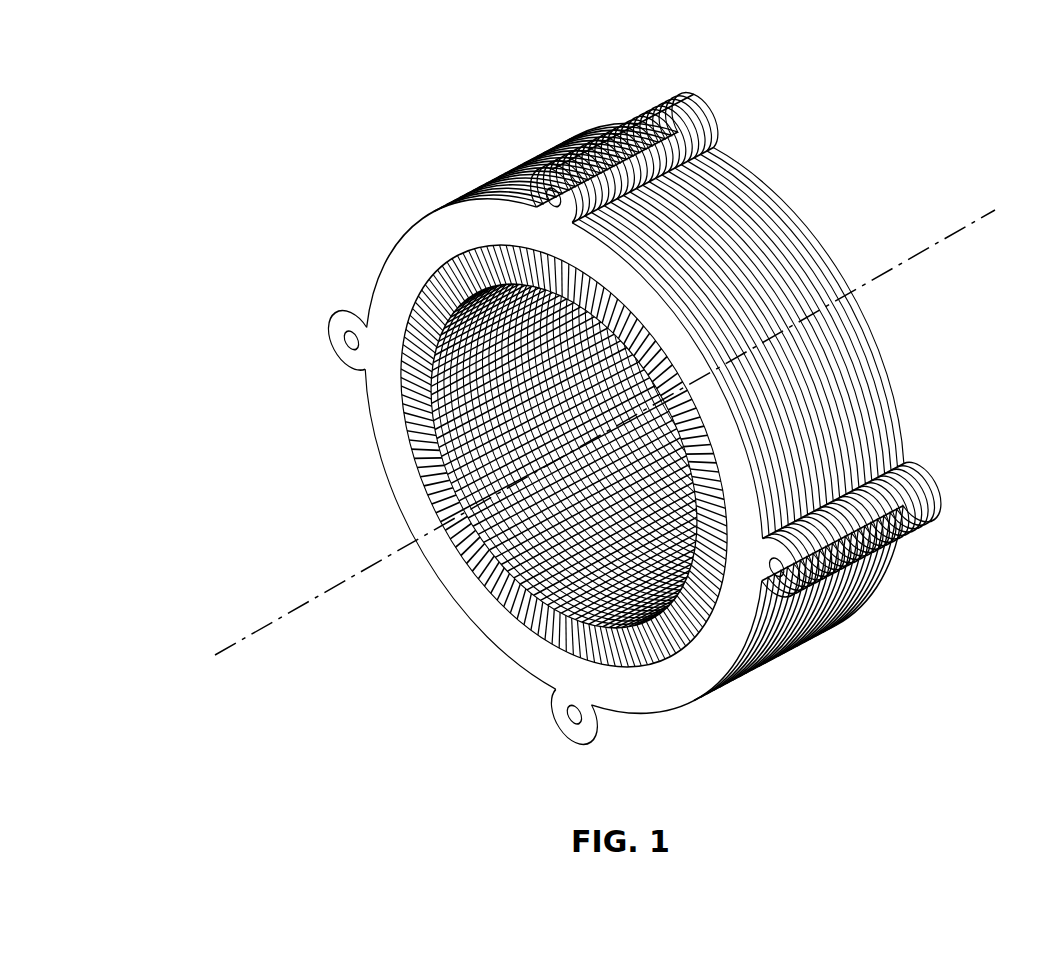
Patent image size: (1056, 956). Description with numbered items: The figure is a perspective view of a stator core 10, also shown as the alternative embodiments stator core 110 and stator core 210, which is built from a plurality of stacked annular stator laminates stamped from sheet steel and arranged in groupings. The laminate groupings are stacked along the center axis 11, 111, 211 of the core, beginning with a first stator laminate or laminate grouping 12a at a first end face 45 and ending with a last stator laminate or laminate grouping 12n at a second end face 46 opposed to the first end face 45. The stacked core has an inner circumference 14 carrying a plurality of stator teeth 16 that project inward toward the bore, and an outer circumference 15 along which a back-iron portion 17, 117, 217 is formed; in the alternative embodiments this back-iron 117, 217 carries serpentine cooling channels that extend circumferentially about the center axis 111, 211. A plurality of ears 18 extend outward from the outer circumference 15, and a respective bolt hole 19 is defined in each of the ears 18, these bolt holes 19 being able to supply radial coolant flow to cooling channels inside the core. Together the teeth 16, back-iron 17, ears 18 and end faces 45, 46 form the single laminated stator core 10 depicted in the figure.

The stator core 10 is at (535, 424).
The stator core 110 is at (535, 424).
The stator core 210 is at (800, 158).
The center axis 11 is at (515, 432).
The center axis 111 is at (515, 432).
The center axis 211 is at (320, 587).
The first stator laminate or laminate grouping 12a is at (478, 203).
The last stator laminate or laminate grouping 12n is at (888, 399).
The inner circumference 14 is at (527, 455).
The stator teeth 16 is at (425, 375).
The outer circumference 15 is at (838, 623).
The back-iron portion 17 is at (502, 434).
The back-iron 117 is at (502, 434).
The back-iron 217 is at (417, 250).
The ears 18 is at (690, 122).
The bolt hole 19 is at (569, 713).
The first end face 45 is at (497, 610).
The second end face 46 is at (912, 322).